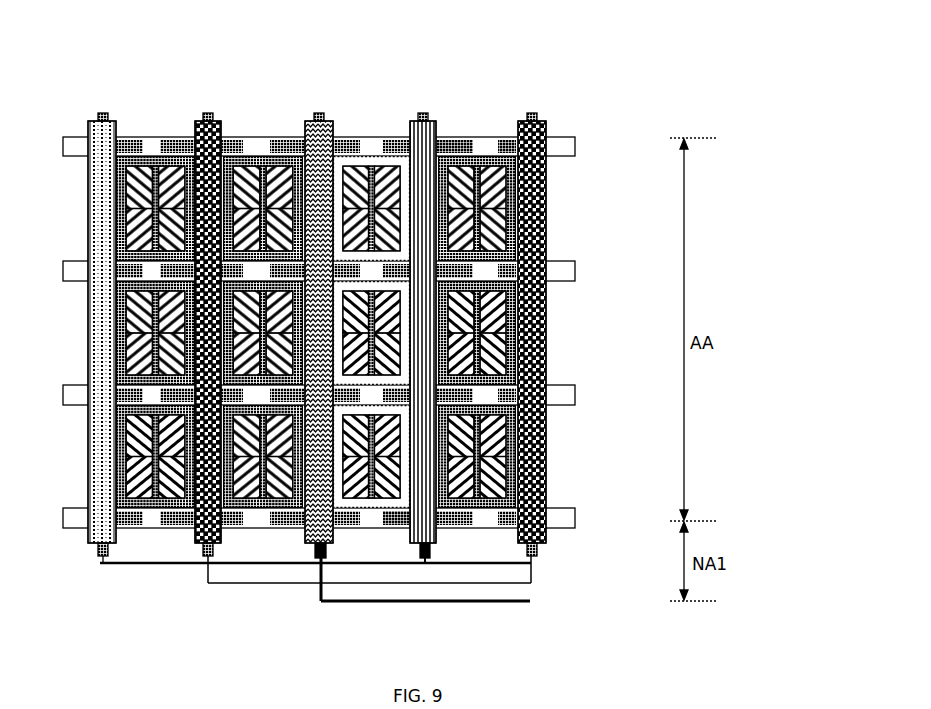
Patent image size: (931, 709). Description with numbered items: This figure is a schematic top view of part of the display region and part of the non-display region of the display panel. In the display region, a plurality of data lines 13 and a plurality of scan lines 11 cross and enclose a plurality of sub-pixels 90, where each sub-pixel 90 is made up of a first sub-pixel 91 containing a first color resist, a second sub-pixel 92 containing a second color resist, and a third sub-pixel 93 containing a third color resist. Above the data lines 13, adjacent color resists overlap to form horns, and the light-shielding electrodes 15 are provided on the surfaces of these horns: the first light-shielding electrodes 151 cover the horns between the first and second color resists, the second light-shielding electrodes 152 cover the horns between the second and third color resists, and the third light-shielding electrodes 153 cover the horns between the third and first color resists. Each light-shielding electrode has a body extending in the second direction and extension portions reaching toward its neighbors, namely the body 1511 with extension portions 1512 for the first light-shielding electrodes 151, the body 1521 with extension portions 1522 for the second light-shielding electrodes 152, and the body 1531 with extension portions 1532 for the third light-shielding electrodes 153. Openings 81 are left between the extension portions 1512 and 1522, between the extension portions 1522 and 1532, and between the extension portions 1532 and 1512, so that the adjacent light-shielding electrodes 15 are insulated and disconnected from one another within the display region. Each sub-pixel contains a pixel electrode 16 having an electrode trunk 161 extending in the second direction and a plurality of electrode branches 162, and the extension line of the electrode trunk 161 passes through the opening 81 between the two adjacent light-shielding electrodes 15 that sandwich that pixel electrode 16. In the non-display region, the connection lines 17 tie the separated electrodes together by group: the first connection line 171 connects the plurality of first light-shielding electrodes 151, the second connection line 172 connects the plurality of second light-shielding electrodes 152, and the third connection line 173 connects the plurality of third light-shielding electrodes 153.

The scan lines 11 is at (550, 140).
The data lines 13 is at (526, 112).
The light-shielding electrodes 15 is at (187, 80).
The first light-shielding electrodes 151 is at (199, 107).
The second light-shielding electrodes 152 is at (311, 107).
The third light-shielding electrodes 153 is at (415, 107).
The body 1511 is at (188, 540).
The extension portions 1512 is at (160, 518).
The body 1521 is at (300, 548).
The extension portions 1522 is at (270, 518).
The body 1531 is at (408, 545).
The extension portions 1532 is at (385, 518).
The pixel electrode 16 is at (505, 78).
The electrode trunk 161 is at (464, 140).
The electrode branches 162 is at (485, 142).
The connection lines 17 is at (626, 566).
The first connection line 171 is at (408, 574).
The second connection line 172 is at (414, 592).
The third connection line 173 is at (551, 520).
The openings 81 is at (548, 382).
The sub-pixel 90 is at (428, 334).
The first sub-pixel 91 is at (85, 150).
The second sub-pixel 92 is at (105, 280).
The third sub-pixel 93 is at (105, 410).